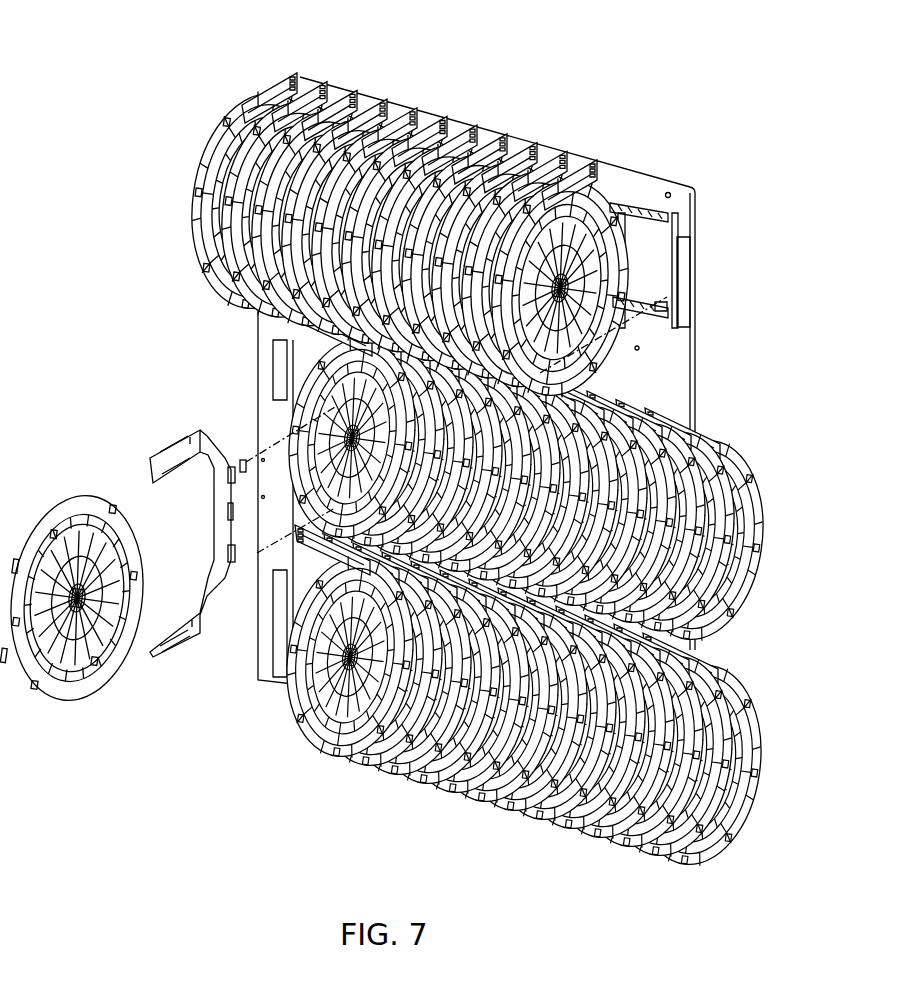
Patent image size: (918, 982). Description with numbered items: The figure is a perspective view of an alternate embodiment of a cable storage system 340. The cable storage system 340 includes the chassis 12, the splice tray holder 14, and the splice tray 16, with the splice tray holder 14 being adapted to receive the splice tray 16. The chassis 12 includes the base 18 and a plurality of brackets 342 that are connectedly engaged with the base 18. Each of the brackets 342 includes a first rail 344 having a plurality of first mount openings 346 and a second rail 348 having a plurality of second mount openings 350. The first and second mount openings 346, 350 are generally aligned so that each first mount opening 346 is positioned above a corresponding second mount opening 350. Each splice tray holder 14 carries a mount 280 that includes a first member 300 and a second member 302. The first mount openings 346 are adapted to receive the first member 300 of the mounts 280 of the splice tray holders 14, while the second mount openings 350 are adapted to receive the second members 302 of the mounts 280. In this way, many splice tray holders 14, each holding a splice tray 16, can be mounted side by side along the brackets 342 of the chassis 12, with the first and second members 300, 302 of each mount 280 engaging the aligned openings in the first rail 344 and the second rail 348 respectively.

The chassis 12 is at (538, 143).
The splice tray holder 14 is at (171, 432).
The splice tray 16 is at (72, 487).
The base 18 is at (676, 379).
The mount 280 is at (245, 456).
The first member 300 is at (224, 449).
The second member 302 is at (228, 570).
The cable storage system 340 is at (142, 205).
The brackets 342 is at (637, 203).
The first rail 344 is at (645, 207).
The first mount openings 346 is at (603, 247).
The second rail 348 is at (637, 299).
The second mount openings 350 is at (666, 305).